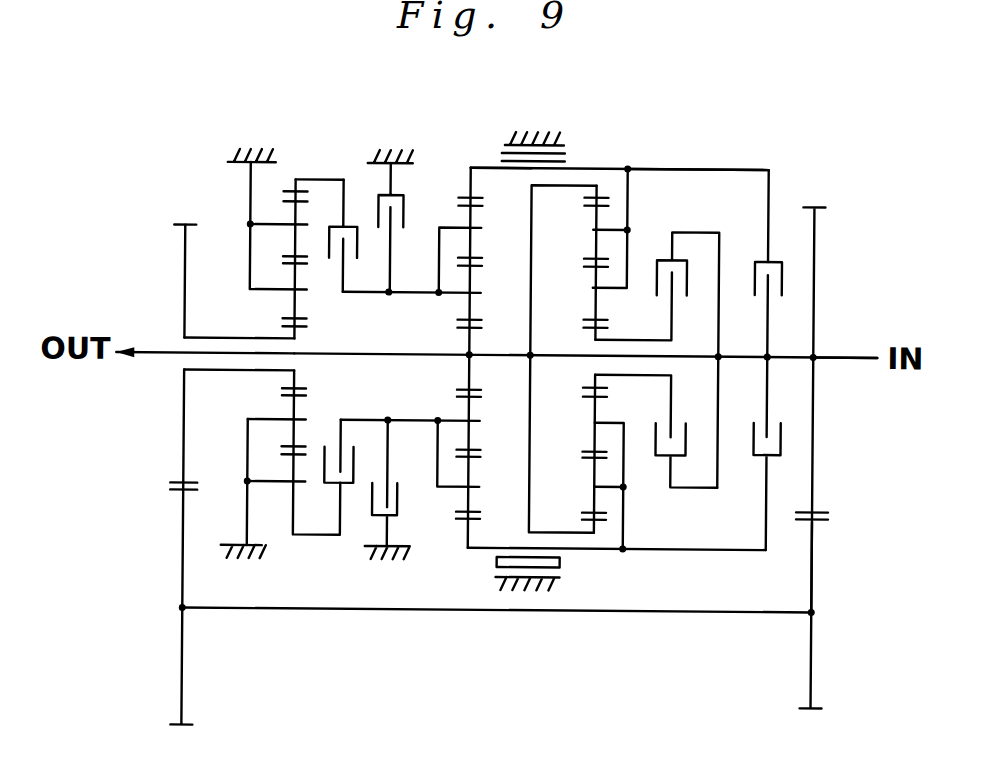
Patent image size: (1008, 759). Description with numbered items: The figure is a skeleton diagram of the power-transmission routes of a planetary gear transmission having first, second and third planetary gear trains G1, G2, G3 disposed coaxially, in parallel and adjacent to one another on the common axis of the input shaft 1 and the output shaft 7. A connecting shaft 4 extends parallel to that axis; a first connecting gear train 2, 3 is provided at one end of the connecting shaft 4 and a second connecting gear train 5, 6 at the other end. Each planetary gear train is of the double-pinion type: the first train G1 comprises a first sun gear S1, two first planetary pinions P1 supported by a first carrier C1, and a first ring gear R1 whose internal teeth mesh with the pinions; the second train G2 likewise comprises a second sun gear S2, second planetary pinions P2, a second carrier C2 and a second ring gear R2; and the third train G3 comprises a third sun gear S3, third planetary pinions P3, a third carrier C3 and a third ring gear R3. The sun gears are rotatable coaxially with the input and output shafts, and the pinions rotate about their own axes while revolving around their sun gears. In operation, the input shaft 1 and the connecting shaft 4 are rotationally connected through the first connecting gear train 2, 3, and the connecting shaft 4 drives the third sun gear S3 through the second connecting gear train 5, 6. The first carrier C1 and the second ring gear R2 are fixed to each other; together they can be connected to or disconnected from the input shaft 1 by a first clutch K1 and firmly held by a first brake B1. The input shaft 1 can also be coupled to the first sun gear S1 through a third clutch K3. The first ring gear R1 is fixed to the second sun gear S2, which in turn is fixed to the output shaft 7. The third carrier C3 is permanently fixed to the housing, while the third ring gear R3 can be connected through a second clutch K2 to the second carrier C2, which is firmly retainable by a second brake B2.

The first planetary gear train G1 is at (603, 150).
The second planetary gear train G2 is at (466, 151).
The third planetary gear train G3 is at (295, 153).
The first ring gear R1 is at (600, 193).
The second ring gear R2 is at (461, 193).
The third ring gear R3 is at (297, 194).
The first carrier C1 is at (625, 258).
The second carrier C2 is at (437, 256).
The third carrier C3 is at (249, 271).
The first planetary pinions P1 is at (597, 243).
The second planetary pinions P2 is at (473, 240).
The third planetary pinions P3 is at (296, 242).
The first sun gear S1 is at (589, 327).
The second sun gear S2 is at (467, 326).
The third sun gear S3 is at (296, 335).
The first clutch K1 is at (782, 437).
The second clutch K2 is at (348, 488).
The third clutch K3 is at (686, 437).
The first brake B1 is at (560, 560).
The second brake B2 is at (398, 501).
The input shaft 1 is at (835, 355).
The first connecting gear train 2 is at (814, 493).
The first connecting gear train 3 is at (814, 541).
The connecting shaft 4 is at (718, 612).
The second connecting gear train 5 is at (188, 686).
The second connecting gear train 6 is at (184, 448).
The output shaft 7 is at (153, 356).